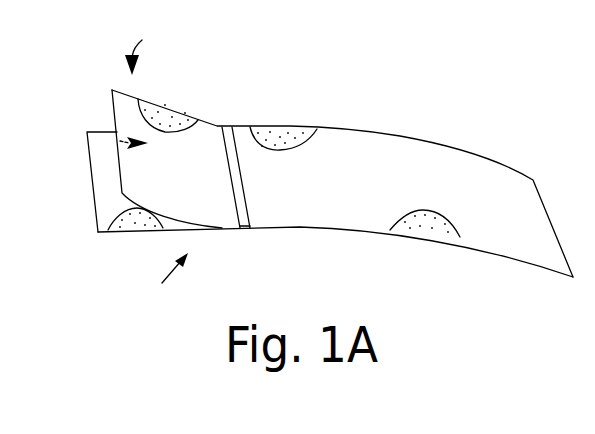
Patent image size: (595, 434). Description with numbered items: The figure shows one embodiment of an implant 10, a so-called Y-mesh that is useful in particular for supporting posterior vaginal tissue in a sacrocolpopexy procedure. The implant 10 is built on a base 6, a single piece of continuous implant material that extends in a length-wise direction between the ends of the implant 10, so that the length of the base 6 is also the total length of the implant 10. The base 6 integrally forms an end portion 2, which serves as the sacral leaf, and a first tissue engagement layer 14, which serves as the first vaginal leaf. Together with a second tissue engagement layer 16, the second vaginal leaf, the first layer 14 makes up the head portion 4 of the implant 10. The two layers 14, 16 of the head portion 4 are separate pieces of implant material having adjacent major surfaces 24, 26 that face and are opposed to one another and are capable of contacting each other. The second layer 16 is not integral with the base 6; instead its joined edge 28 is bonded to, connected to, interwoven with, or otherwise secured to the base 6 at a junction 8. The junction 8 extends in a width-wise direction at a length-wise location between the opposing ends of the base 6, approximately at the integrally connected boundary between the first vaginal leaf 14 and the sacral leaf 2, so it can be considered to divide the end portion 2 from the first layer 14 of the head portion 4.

The end portion 2 is at (376, 151).
The head portion 4 is at (141, 46).
The base 6 is at (267, 229).
The junction 8 is at (242, 229).
The implant 10 is at (169, 284).
The first tissue engagement layer 14 is at (113, 231).
The second tissue engagement layer 16 is at (162, 107).
The major surface 24 is at (110, 206).
The major surface 26 is at (117, 140).
The joined edge 28 is at (227, 166).